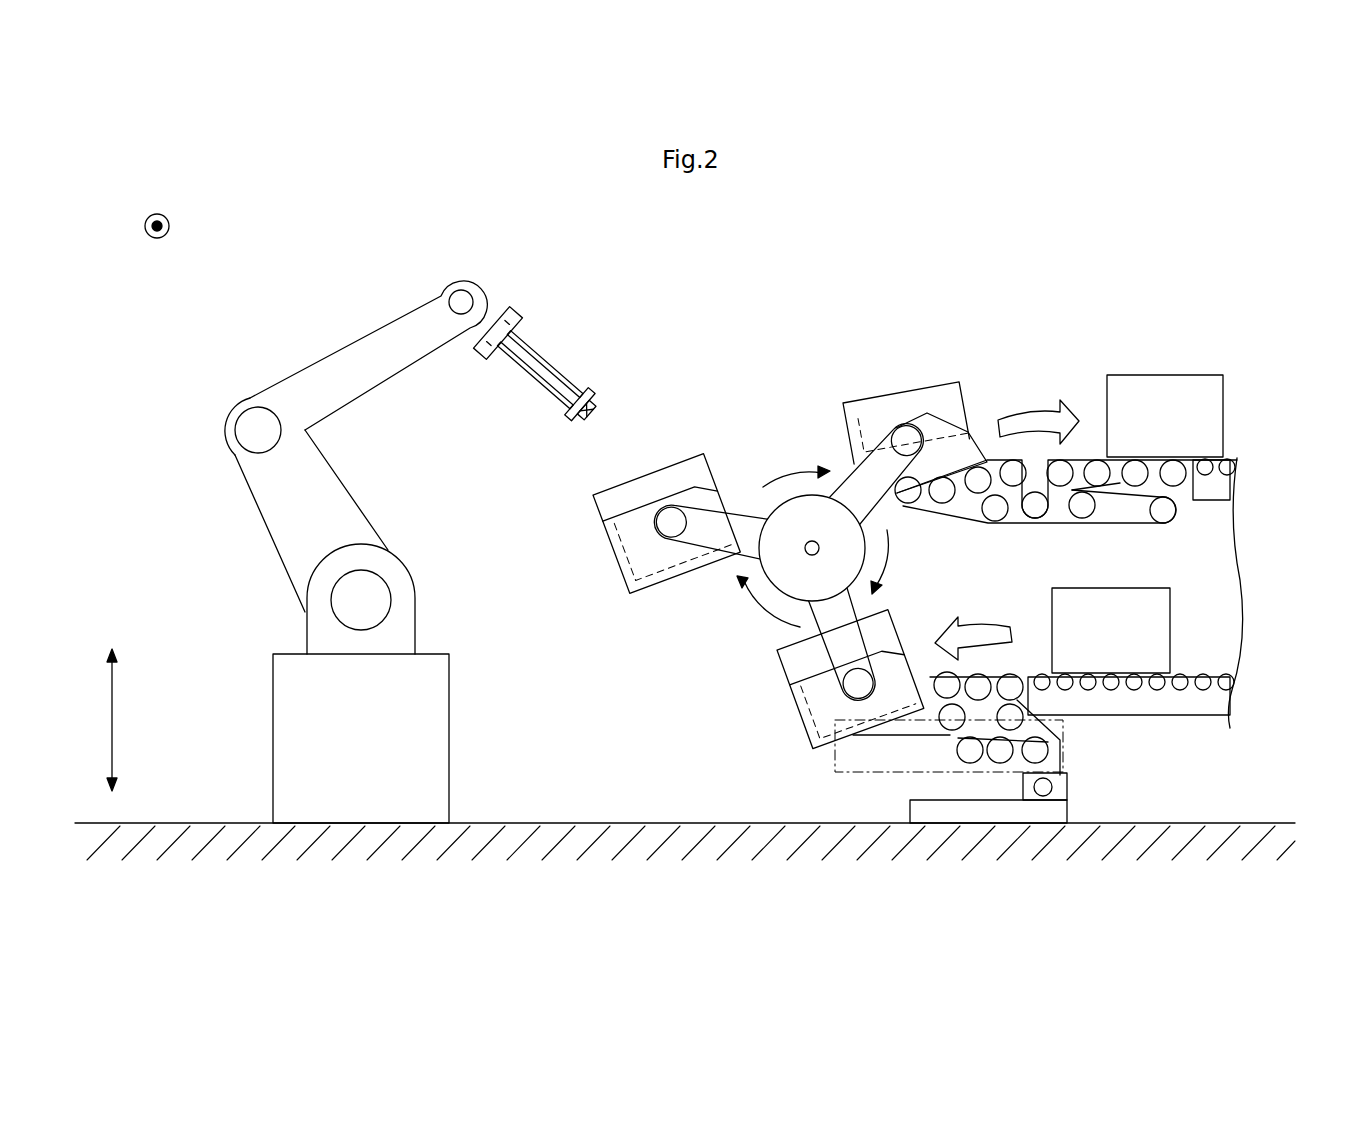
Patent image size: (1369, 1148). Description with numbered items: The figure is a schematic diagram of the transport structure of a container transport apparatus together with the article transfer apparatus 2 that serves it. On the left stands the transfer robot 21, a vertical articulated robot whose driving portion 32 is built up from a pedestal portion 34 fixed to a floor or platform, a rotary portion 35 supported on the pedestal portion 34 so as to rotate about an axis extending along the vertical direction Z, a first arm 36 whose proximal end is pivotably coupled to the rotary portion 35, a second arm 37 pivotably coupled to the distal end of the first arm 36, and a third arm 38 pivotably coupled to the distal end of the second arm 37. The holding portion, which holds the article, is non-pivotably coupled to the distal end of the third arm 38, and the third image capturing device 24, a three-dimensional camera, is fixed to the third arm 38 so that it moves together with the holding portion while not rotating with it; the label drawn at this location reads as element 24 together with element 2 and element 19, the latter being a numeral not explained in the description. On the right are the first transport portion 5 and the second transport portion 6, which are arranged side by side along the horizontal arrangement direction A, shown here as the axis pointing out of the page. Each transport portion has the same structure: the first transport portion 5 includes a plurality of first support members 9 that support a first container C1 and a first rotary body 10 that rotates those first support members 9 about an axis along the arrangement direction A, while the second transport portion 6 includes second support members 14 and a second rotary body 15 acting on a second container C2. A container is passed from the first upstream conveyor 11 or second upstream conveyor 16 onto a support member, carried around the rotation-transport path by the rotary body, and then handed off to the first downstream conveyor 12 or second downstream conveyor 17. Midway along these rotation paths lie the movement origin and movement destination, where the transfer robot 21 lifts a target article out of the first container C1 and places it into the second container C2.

The arrangement direction A is at (170, 226).
The vertical direction Z is at (120, 720).
The article transfer apparatus 2 is at (383, 516).
The transfer robot 21 is at (215, 575).
The driving portion 32 is at (248, 368).
The pedestal portion 34 is at (290, 750).
The rotary portion 35 is at (316, 636).
The first arm 36 is at (273, 503).
The second arm 37 is at (327, 372).
The third image capturing device 24 is at (500, 333).
The end effector 19 is at (543, 321).
The third arm 38 is at (572, 321).
The first transport portion 5 is at (912, 374).
The second transport portion 6 is at (801, 563).
The first support member 9 is at (843, 405).
The second support member 14 is at (787, 575).
The first rotary body 10 is at (780, 513).
The second rotary body 15 is at (792, 552).
The first upstream conveyor 11 is at (1230, 698).
The second upstream conveyor 16 is at (1087, 713).
The first downstream conveyor 12 is at (1223, 487).
The second downstream conveyor 17 is at (1106, 564).
The first container C1 is at (598, 500).
The second container C2 is at (825, 495).